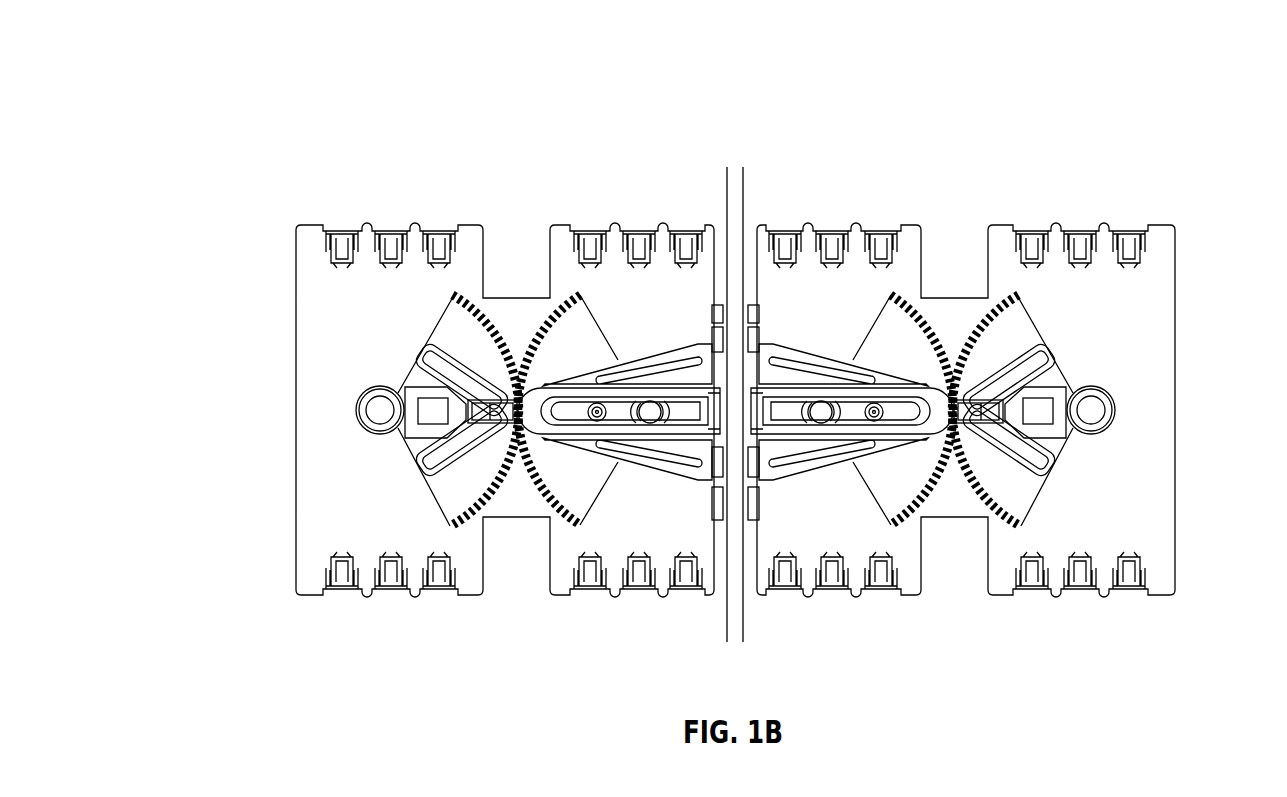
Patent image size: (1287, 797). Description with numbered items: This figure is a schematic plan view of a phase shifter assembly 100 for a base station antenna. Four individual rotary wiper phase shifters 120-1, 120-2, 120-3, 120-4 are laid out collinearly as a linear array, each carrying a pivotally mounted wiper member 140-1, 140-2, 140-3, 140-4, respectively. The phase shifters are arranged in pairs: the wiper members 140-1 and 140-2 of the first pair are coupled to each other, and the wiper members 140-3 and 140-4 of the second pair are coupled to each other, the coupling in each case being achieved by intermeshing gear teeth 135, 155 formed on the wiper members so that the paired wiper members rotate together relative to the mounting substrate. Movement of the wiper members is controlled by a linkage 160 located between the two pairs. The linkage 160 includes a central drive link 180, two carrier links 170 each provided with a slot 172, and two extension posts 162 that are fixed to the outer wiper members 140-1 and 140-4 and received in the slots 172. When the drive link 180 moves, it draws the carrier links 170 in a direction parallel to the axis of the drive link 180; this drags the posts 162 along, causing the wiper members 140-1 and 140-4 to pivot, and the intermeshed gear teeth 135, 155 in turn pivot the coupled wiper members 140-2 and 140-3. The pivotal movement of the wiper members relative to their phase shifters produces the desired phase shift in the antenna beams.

The phase shifter assembly 100 is at (343, 158).
The phase shifter 120-1 is at (310, 328).
The phase shifter 120-2 is at (610, 518).
The phase shifter 120-3 is at (855, 553).
The phase shifter 120-4 is at (1137, 517).
The gear teeth 135 is at (494, 330).
The wiper member 140-1 is at (452, 317).
The wiper member 140-2 is at (605, 358).
The wiper member 140-3 is at (873, 340).
The wiper member 140-4 is at (1023, 318).
The gear teeth 155 is at (534, 340).
The linkage 160 is at (699, 379).
The extension post 162 is at (597, 404).
The carrier link 170 is at (572, 442).
The slot 172 is at (587, 413).
The drive link 180 is at (727, 613).